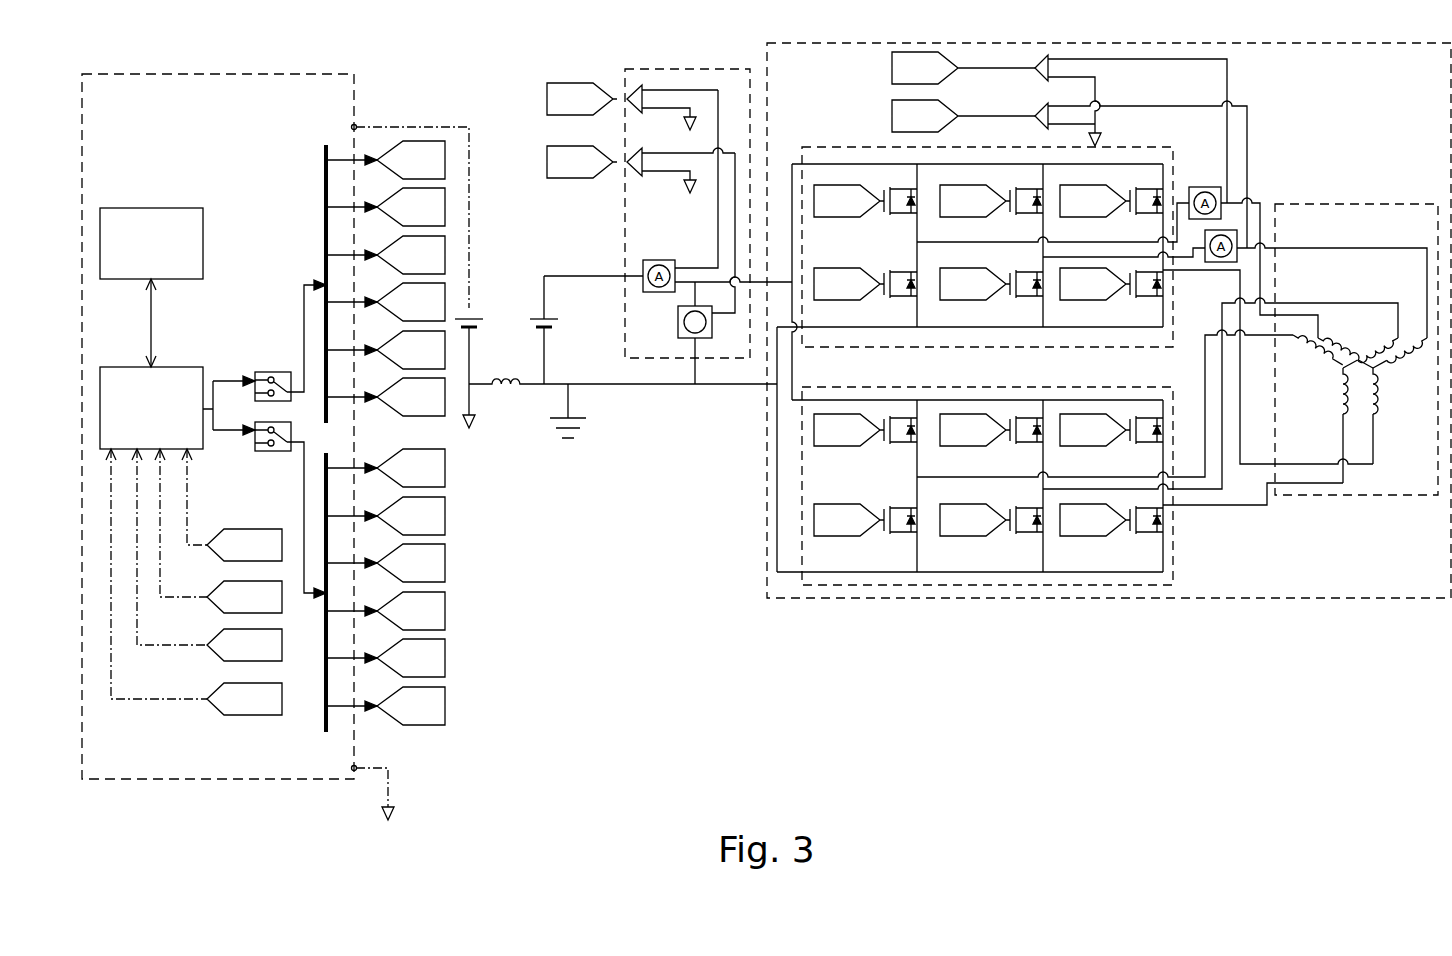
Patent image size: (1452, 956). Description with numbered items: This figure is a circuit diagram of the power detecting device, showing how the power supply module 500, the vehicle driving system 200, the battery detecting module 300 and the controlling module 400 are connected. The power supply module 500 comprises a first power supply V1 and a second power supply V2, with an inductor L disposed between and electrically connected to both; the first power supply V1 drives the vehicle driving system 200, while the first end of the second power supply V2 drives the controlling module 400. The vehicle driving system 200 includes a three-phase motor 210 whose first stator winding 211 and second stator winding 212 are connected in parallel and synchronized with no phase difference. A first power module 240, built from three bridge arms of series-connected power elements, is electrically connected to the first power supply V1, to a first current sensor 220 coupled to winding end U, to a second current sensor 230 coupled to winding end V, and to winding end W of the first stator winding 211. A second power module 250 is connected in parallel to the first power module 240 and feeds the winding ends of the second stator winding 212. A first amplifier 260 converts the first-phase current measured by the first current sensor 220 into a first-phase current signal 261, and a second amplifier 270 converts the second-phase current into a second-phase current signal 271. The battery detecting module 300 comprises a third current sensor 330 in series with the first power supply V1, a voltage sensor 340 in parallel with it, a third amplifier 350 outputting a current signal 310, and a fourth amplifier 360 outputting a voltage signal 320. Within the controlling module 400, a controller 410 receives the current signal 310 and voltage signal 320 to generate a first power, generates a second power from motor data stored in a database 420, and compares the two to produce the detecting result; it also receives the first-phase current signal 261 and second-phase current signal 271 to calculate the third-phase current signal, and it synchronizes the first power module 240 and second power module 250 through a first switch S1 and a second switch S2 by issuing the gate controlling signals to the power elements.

The controlling module 400 is at (185, 70).
The controller 410 is at (177, 489).
The database 420 is at (151, 243).
The power supply module 500 is at (532, 66).
The battery detecting module 300 is at (650, 68).
The current signal 310 is at (412, 372).
The voltage signal 320 is at (412, 430).
The third current sensor 330 is at (652, 292).
The voltage sensor 340 is at (683, 338).
The third amplifier 350 is at (672, 98).
The fourth amplifier 360 is at (678, 162).
The vehicle driving system 200 is at (967, 43).
The three-phase motor 210 is at (1362, 196).
The first stator winding 211 is at (1378, 372).
The second stator winding 212 is at (1340, 372).
The first current sensor 220 is at (1210, 187).
The second current sensor 230 is at (1232, 230).
The first power module 240 is at (880, 145).
The second power module 250 is at (890, 385).
The first amplifier 260 is at (1100, 67).
The first-phase current signal 261 is at (621, 306).
The second amplifier 270 is at (1106, 118).
The second-phase current signal 271 is at (621, 356).
The first switch S1 is at (270, 372).
The second switch S2 is at (268, 451).
The first power supply V1 is at (535, 295).
The second power supply V2 is at (478, 305).
The inductor L is at (512, 372).